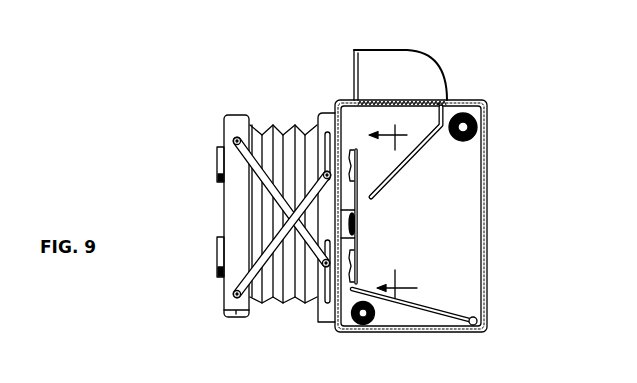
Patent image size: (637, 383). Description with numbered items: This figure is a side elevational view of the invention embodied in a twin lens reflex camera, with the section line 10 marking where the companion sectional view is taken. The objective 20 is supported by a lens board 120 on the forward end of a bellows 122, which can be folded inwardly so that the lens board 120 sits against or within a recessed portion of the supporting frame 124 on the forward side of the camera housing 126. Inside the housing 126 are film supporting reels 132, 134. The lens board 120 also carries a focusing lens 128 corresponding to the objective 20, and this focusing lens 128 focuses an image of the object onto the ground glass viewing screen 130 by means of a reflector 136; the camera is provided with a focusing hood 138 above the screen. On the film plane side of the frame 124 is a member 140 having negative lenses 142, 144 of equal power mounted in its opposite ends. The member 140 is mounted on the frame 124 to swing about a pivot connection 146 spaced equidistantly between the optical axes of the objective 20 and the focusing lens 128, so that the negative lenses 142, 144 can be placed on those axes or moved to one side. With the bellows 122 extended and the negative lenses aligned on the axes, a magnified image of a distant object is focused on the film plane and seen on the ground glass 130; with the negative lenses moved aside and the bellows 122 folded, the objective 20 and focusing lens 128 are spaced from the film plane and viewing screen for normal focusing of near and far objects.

The section line 10 is at (404, 212).
The objective 20 is at (218, 270).
The lens board 120 is at (228, 318).
The bellows 122 is at (291, 305).
The supporting frame 124 is at (318, 110).
The camera housing 126 is at (487, 225).
The focusing lens 128 is at (222, 150).
The ground glass viewing screen 130 is at (437, 105).
The film supporting reel 132 is at (488, 113).
The film supporting reel 134 is at (360, 328).
The reflector 136 is at (423, 150).
The focusing hood 138 is at (382, 50).
The member 140 is at (358, 243).
The negative lens 142 is at (358, 172).
The negative lens 144 is at (355, 277).
The pivot connection 146 is at (358, 222).